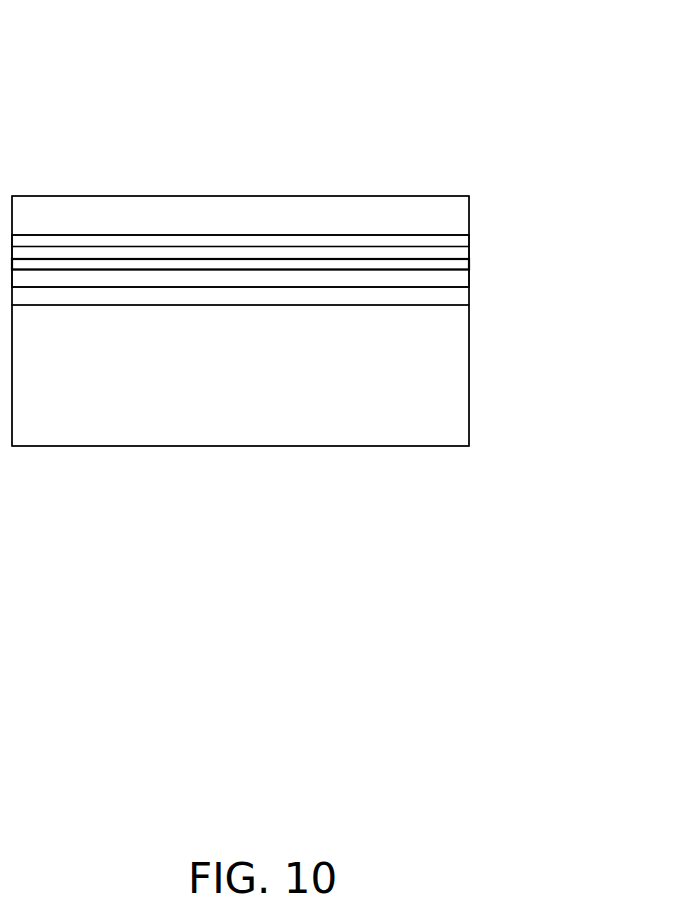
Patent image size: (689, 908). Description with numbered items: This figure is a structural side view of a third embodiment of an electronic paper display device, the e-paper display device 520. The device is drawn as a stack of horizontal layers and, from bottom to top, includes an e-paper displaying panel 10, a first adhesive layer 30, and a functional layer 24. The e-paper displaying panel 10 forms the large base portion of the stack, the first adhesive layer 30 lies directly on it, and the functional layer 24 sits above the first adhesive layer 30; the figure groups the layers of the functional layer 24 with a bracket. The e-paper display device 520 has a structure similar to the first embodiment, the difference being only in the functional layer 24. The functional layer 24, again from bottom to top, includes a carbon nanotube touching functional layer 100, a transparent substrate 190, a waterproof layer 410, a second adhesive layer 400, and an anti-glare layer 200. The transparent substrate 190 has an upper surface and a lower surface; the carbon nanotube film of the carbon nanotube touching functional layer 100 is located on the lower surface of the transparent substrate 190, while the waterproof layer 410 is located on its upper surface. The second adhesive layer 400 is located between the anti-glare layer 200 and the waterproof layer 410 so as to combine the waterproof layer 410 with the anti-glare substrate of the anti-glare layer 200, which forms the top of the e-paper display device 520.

The e-paper display device 520 is at (198, 88).
The anti-glare layer 200 is at (453, 210).
The second adhesive layer 400 is at (459, 242).
The waterproof layer 410 is at (463, 250).
The transparent substrate 190 is at (462, 265).
The carbon nanotube touching functional layer 100 is at (462, 278).
The first adhesive layer 30 is at (462, 297).
The e-paper displaying panel 10 is at (440, 384).
The functional layer 24 is at (566, 210).